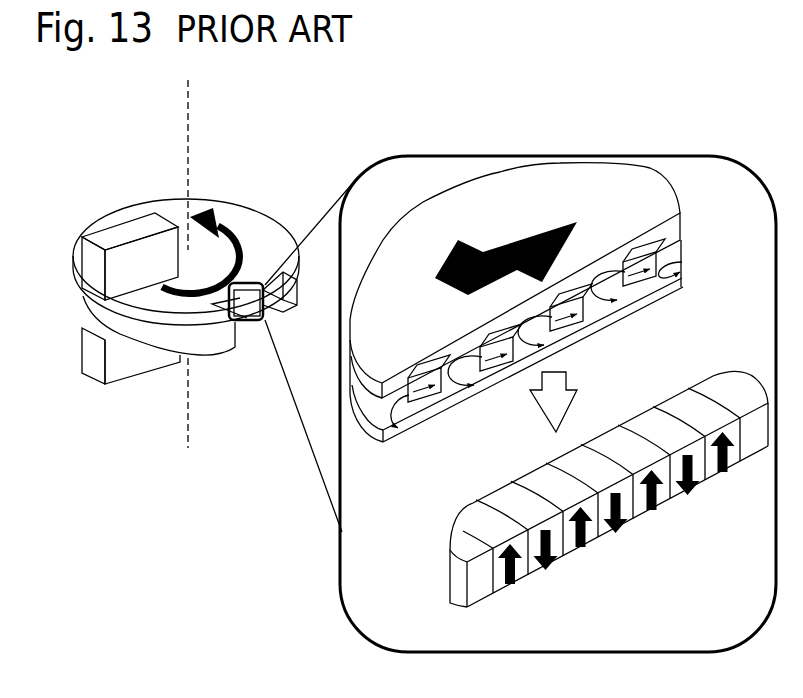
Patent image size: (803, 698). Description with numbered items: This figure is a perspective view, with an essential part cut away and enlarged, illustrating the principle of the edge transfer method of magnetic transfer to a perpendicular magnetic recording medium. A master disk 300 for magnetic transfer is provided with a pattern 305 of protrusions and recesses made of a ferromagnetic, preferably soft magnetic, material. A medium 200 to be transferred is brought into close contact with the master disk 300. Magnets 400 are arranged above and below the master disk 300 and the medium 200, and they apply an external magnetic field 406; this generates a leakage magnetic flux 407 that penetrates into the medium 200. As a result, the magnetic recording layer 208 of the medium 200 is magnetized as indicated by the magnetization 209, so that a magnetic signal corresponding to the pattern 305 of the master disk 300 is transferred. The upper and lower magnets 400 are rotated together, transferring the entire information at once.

The medium to be transferred 200 is at (230, 350).
The magnetic recording layer 208 is at (667, 286).
The magnetization of the magnetic recording layer 209 is at (551, 562).
The master disk 300 is at (239, 219).
The pattern of protrusions and recesses 305 is at (577, 315).
The magnets 400 is at (137, 219).
The external magnetic field 406 is at (506, 255).
The leakage magnetic flux 407 is at (554, 349).